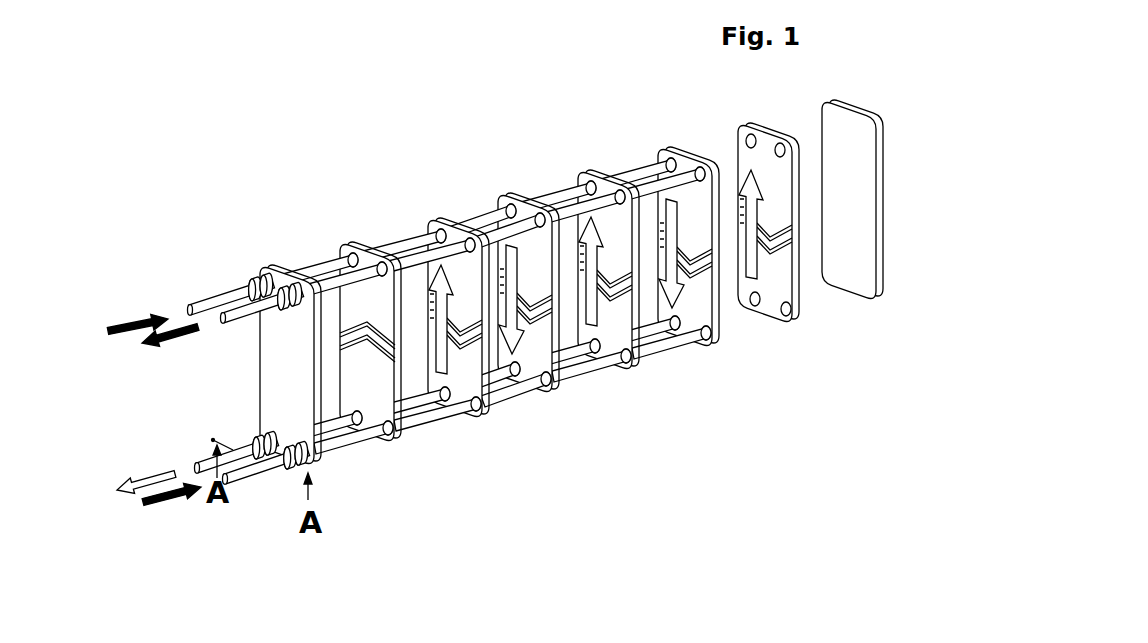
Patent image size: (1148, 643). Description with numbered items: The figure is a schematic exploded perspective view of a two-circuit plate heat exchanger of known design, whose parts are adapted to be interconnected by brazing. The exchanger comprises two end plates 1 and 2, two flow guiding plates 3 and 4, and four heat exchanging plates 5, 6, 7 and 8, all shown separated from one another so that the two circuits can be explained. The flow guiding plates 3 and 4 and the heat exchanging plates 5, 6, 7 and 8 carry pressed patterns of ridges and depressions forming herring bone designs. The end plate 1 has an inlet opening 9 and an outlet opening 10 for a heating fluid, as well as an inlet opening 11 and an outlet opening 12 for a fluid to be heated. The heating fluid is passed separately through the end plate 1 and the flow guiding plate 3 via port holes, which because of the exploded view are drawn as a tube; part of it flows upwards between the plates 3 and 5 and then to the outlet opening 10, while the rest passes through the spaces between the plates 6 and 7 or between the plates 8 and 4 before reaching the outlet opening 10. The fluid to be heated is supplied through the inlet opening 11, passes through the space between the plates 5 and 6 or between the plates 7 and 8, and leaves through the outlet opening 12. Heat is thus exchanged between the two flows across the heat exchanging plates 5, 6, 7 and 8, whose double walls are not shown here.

The end plate 1 is at (282, 353).
The end plate 2 is at (858, 267).
The flow guiding plate 3 is at (367, 303).
The flow guiding plate 4 is at (775, 277).
The heat exchanging plate 5 is at (447, 260).
The heat exchanging plate 6 is at (530, 260).
The heat exchanging plate 7 is at (608, 227).
The heat exchanging plate 8 is at (690, 207).
The inlet opening 9 is at (228, 478).
The outlet opening 10 is at (221, 324).
The inlet opening 11 is at (188, 307).
The outlet opening 12 is at (197, 468).